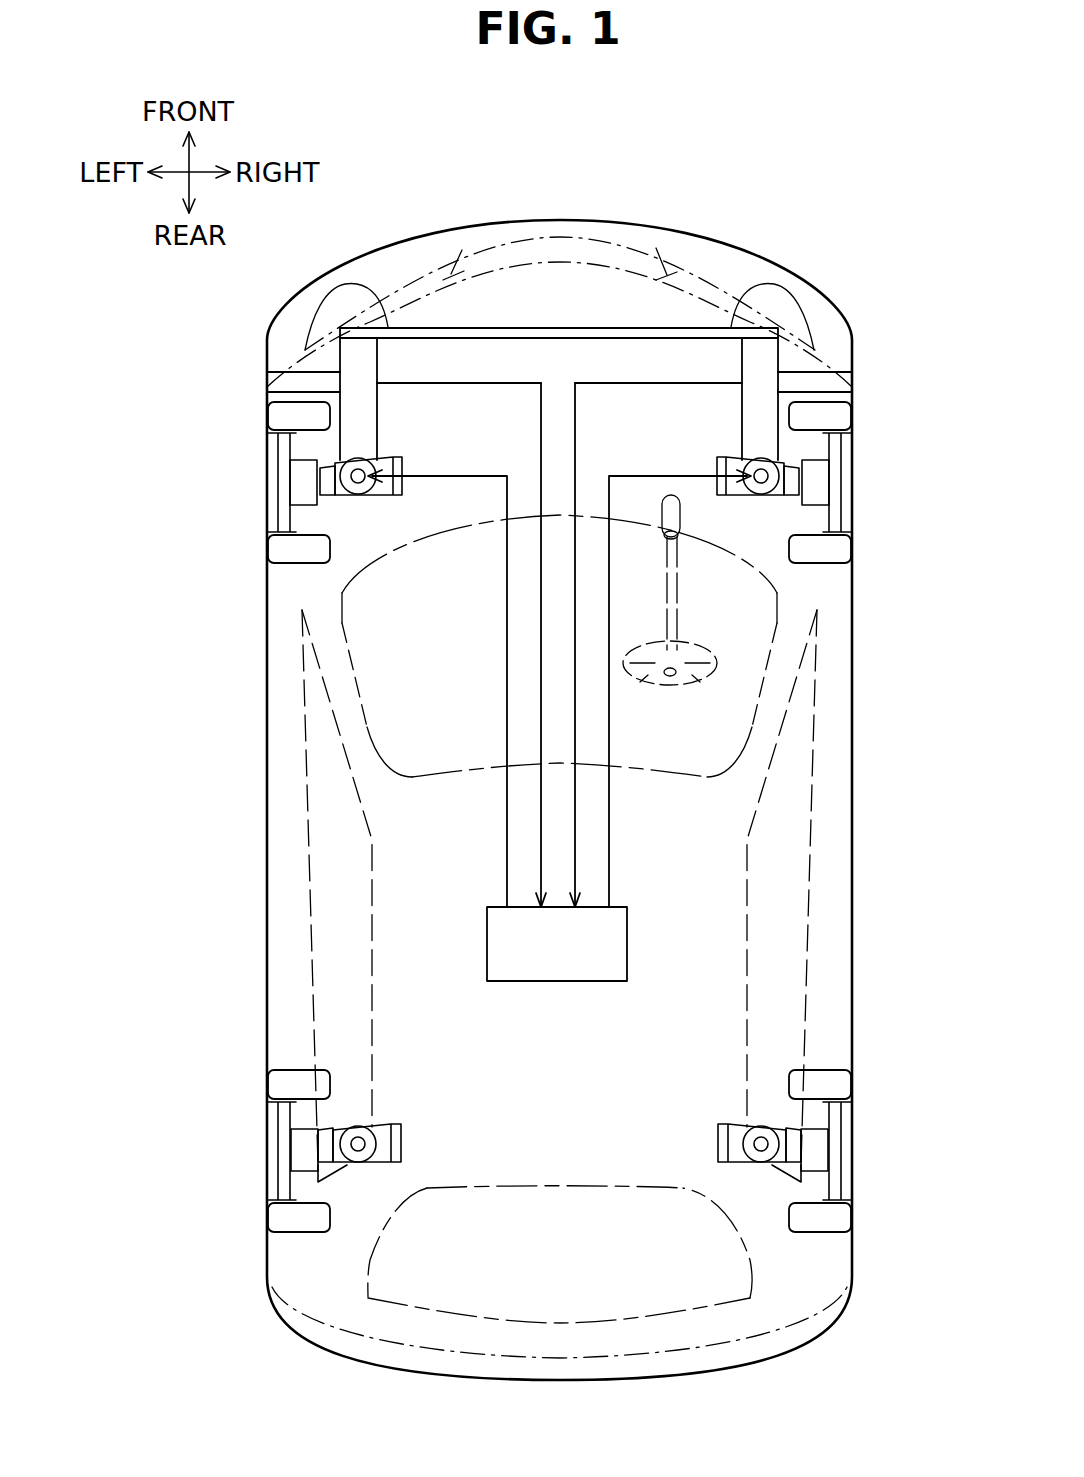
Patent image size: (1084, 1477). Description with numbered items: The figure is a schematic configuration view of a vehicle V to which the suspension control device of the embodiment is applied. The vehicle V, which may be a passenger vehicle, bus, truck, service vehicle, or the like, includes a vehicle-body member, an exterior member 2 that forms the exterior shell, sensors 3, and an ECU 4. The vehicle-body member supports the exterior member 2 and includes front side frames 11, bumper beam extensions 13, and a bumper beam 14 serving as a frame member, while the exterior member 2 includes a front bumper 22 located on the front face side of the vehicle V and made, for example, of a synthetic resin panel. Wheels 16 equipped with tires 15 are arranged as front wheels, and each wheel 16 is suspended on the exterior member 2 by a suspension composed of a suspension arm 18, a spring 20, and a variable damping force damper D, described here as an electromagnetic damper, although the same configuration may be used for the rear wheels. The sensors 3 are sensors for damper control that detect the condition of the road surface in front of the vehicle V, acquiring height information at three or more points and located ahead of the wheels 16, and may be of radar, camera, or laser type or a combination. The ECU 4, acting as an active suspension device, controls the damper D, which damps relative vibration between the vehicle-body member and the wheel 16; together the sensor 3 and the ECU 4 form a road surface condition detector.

The exterior member 2 is at (612, 221).
The sensor 3 is at (298, 383).
The ECU 4 is at (627, 937).
The front side frame 11 is at (378, 413).
The bumper beam extension 13 is at (353, 357).
The bumper beam 14 is at (357, 284).
The tire 15 is at (282, 414).
The wheel 16 is at (283, 452).
The suspension arm 18 is at (335, 483).
The spring 20 is at (352, 459).
The front bumper 22 is at (557, 220).
The vehicle V is at (729, 214).
The damper D is at (360, 490).